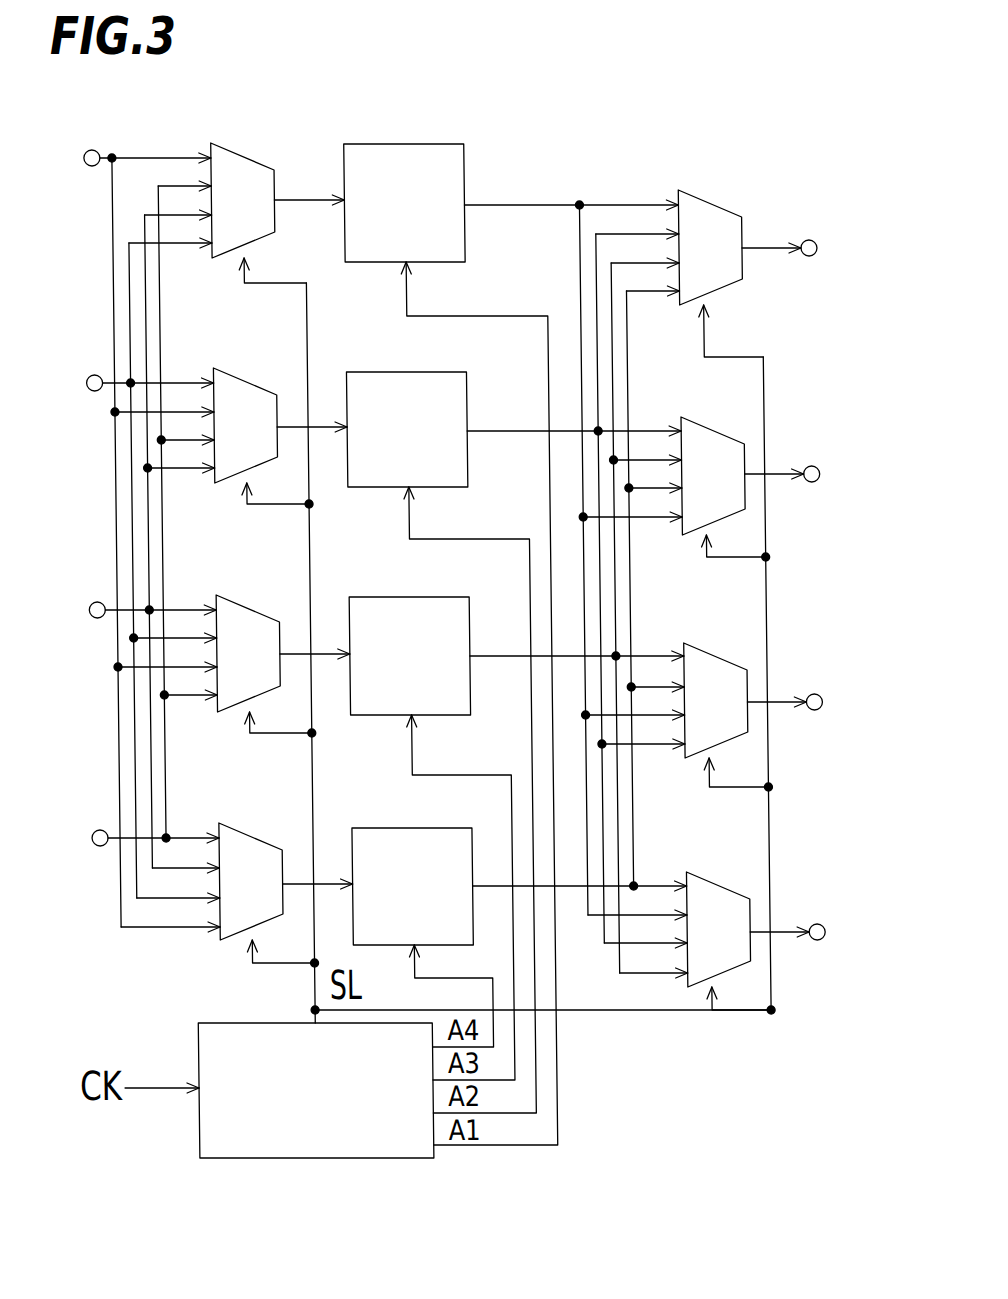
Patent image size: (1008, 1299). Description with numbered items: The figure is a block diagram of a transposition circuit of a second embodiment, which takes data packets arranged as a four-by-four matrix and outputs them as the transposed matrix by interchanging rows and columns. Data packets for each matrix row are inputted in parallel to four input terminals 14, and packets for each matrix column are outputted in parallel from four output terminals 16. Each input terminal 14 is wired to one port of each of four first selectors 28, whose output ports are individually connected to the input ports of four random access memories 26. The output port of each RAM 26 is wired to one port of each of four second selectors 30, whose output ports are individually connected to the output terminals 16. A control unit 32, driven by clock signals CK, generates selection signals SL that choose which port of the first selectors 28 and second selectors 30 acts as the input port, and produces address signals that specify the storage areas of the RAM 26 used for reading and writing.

The input terminals 14 is at (92, 150).
The output terminals 16 is at (811, 240).
The random access memory 26 is at (377, 144).
The first selectors 28 is at (222, 143).
The second selectors 30 is at (706, 195).
The control unit 32 is at (201, 1023).